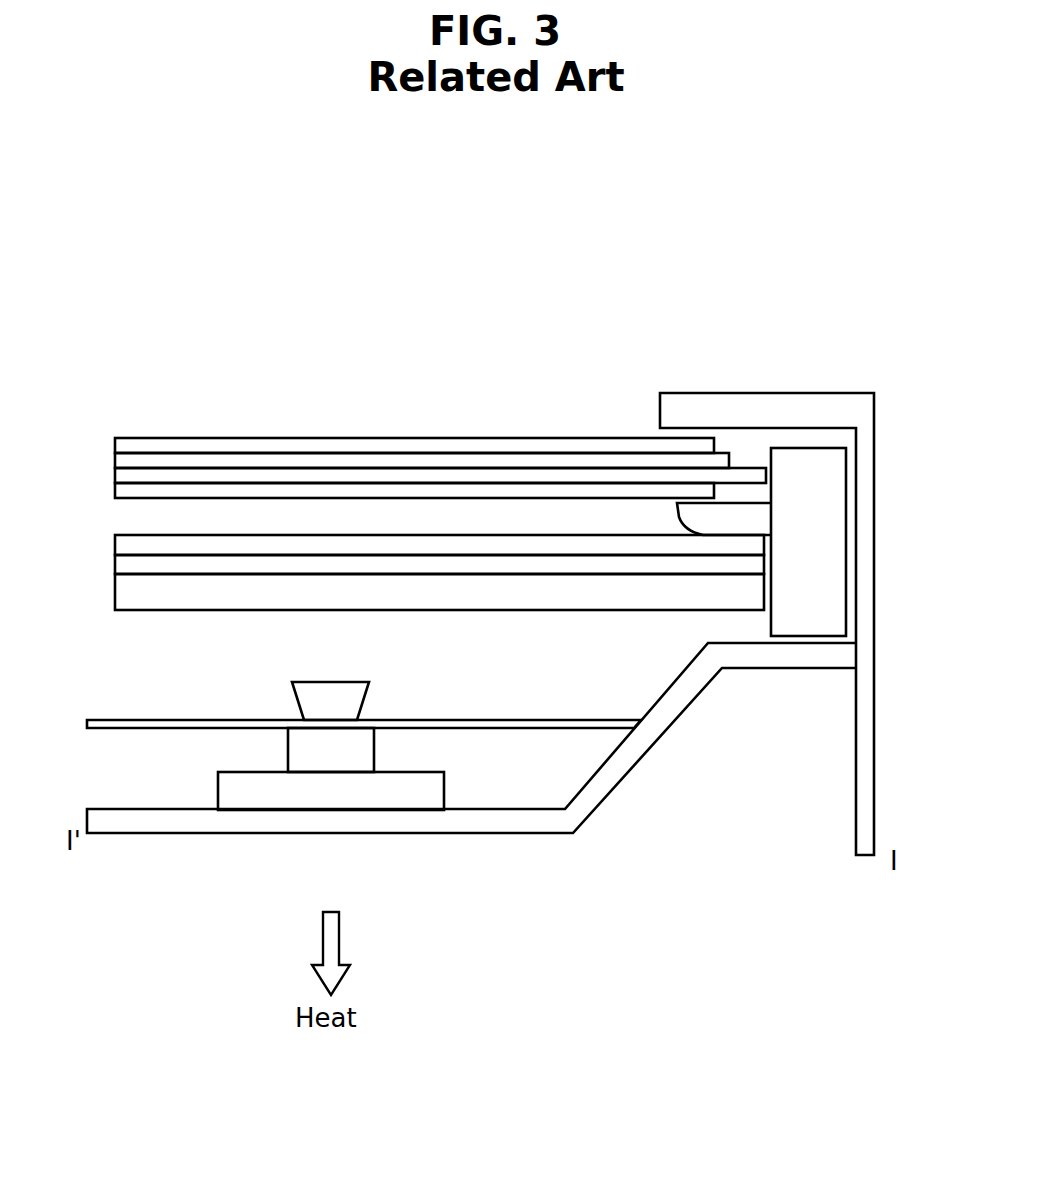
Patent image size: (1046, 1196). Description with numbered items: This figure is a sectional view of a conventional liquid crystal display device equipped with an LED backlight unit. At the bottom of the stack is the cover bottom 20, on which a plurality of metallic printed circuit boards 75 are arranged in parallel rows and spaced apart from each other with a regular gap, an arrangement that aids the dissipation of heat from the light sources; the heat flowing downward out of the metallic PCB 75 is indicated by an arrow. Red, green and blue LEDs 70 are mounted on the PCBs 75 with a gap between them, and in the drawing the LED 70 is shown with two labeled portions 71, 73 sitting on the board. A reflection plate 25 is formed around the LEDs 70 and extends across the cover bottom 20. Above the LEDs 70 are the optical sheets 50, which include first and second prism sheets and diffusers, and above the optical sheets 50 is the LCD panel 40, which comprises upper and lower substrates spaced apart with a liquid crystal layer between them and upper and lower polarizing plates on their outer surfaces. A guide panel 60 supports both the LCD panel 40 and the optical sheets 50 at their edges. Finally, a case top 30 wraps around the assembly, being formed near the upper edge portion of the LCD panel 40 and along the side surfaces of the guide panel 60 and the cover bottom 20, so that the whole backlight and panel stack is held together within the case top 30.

The cover bottom 20 is at (655, 742).
The reflection plate 25 is at (190, 728).
The case top 30 is at (867, 753).
The LCD panel 40 is at (110, 438).
The optical sheets 50 is at (110, 535).
The guide panel 60 is at (830, 525).
The LED 70 is at (403, 703).
The LED chip 71 is at (342, 691).
The LED body 73 is at (357, 740).
The metallic printed circuit board 75 is at (338, 793).